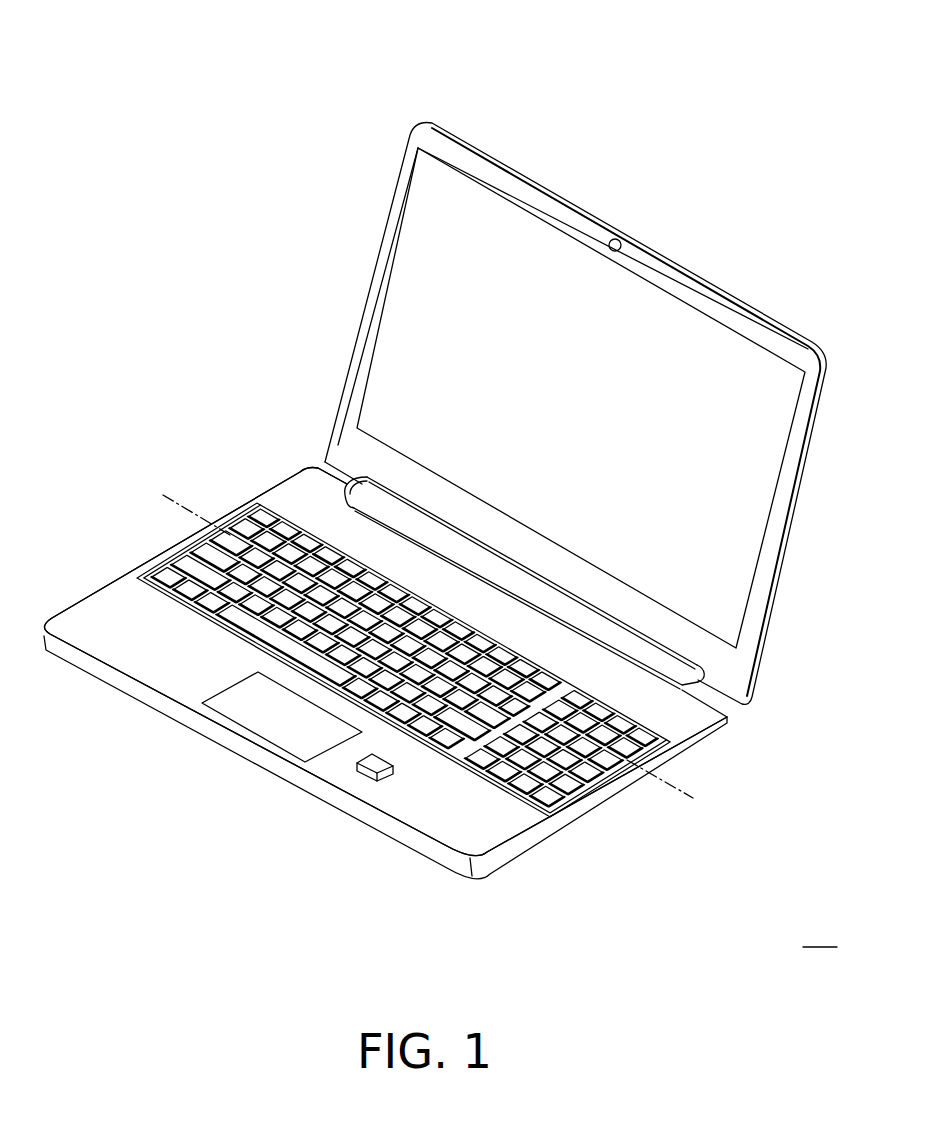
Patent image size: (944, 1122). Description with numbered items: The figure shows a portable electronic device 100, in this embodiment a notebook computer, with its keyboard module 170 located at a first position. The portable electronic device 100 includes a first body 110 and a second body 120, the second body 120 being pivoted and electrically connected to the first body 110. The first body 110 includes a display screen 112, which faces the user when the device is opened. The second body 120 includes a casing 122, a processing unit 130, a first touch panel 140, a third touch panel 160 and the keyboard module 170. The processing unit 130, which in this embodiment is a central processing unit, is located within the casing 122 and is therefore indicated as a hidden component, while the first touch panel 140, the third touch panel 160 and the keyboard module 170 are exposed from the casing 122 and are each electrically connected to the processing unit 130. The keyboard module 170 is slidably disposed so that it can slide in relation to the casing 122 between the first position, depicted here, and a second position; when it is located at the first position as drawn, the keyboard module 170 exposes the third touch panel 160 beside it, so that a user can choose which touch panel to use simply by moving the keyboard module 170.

The portable electronic device 100 is at (320, 96).
The first body 110 is at (790, 537).
The display screen 112 is at (752, 607).
The second body 120 is at (537, 833).
The casing 122 is at (412, 820).
The processing unit 130 is at (356, 765).
The first touch panel 140 is at (252, 722).
The third touch panel 160 is at (560, 787).
The keyboard module 170 is at (181, 568).